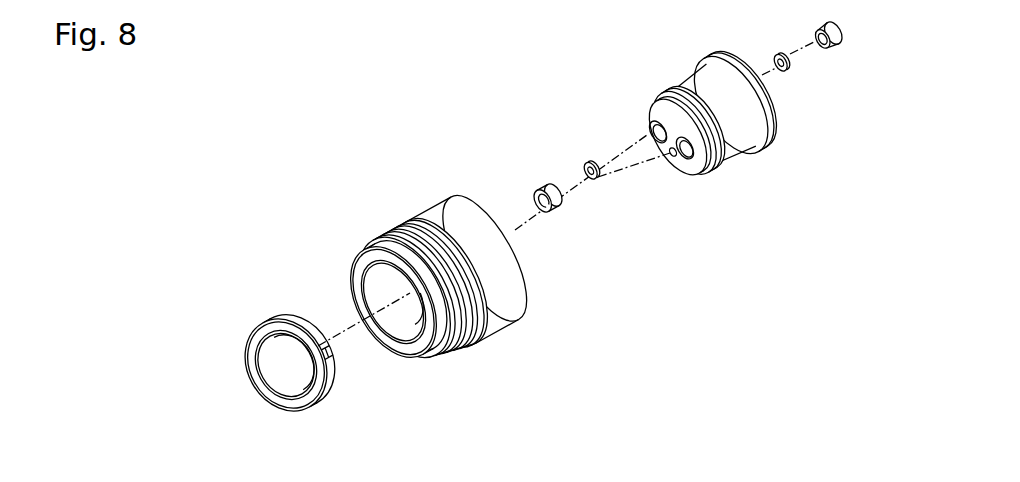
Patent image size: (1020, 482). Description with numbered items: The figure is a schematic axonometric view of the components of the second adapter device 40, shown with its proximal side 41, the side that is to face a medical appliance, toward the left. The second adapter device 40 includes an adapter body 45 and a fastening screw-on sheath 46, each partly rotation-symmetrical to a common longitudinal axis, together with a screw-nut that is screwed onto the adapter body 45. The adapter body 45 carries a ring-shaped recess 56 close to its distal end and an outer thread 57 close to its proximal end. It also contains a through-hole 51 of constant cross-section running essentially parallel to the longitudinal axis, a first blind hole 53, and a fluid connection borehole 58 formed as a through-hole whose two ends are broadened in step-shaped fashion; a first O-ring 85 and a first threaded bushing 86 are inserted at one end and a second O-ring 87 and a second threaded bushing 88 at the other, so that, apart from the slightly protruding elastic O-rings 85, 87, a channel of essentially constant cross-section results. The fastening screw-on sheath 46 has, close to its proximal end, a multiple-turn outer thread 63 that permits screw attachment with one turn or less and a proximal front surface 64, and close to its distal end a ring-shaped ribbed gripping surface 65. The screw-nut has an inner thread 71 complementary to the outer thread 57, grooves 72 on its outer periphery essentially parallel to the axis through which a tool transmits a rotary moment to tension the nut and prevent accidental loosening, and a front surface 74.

The second adapter device 40 is at (516, 221).
The proximal side 41 is at (277, 326).
The adapter body 45 is at (699, 142).
The fastening screw-on sheath 46 is at (468, 265).
The through-hole 51 is at (681, 150).
The first blind hole 53 is at (658, 132).
The ring-shaped recess 56 is at (731, 104).
The outer thread 57 is at (689, 130).
The fluid connection borehole 58 is at (680, 135).
The outer thread 63 is at (415, 293).
The proximal front surface 64 is at (393, 302).
The ring-shaped ribbed gripping surface 65 is at (442, 282).
The inner thread 71 is at (285, 365).
The grooves 72 is at (327, 353).
The front surface 74 is at (286, 365).
The first O-ring 85 is at (585, 162).
The first threaded bushing 86 is at (538, 188).
The second O-ring 87 is at (788, 70).
The second threaded bushing 88 is at (832, 46).